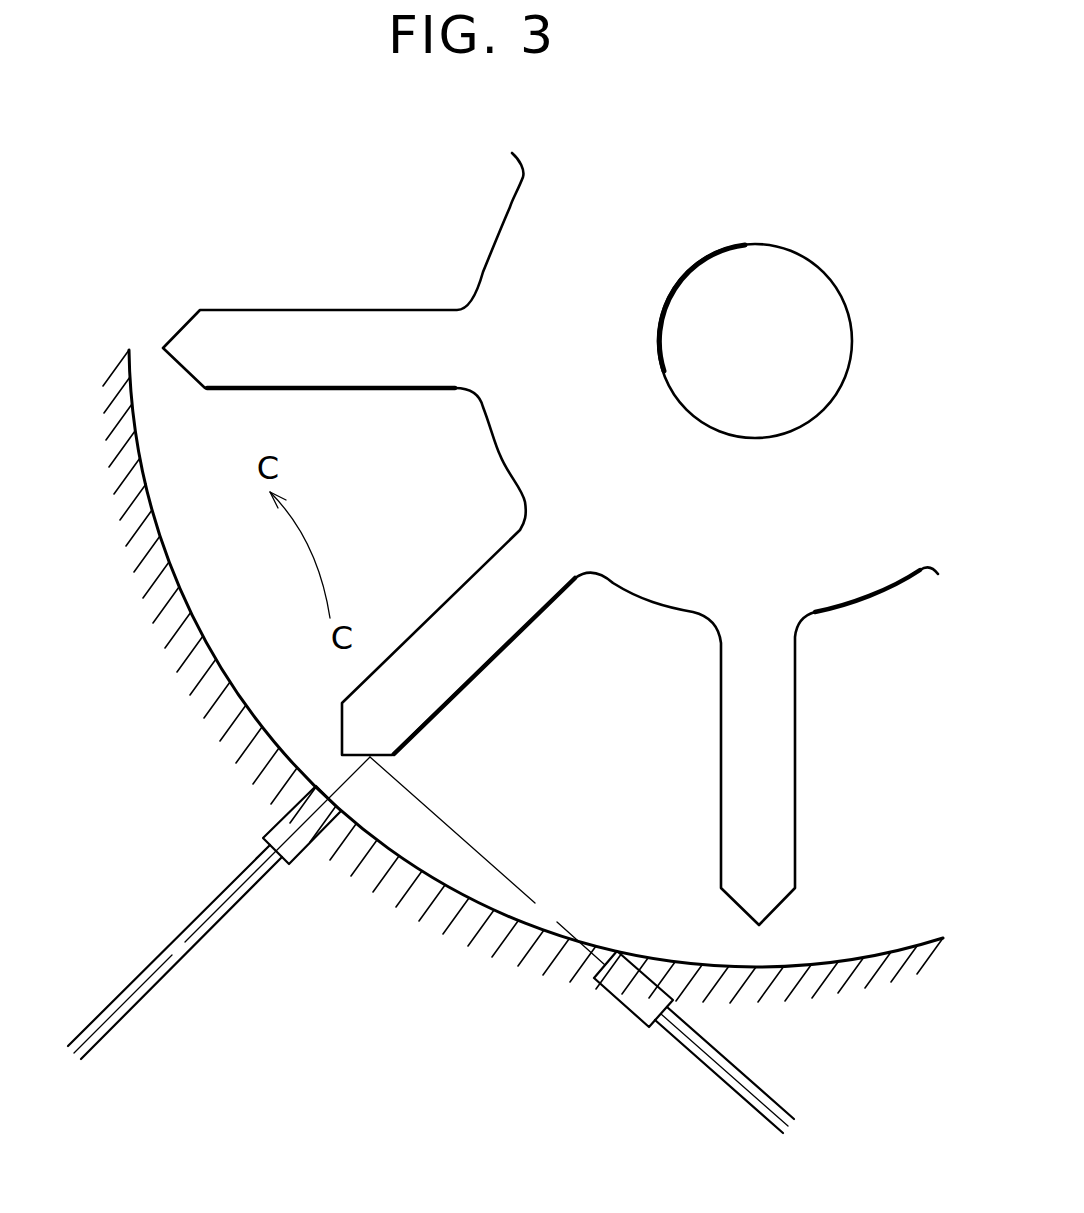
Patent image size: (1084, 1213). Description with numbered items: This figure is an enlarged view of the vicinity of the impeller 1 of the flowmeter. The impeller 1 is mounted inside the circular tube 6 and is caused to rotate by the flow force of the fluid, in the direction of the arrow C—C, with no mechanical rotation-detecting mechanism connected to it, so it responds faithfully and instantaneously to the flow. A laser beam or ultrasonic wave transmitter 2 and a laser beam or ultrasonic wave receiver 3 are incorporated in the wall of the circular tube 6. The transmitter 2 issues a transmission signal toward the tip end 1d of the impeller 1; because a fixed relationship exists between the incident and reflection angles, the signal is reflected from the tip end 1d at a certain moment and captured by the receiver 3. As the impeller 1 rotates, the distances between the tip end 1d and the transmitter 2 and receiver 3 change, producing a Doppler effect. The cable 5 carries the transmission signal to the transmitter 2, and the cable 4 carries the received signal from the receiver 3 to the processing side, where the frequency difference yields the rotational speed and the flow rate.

The impeller 1 is at (477, 568).
The tip end of the impeller 1d is at (387, 753).
The laser beam or ultrasonic wave transmitter 2 is at (613, 1003).
The laser beam or ultrasonic wave receiver 3 is at (298, 846).
The cable 4 is at (160, 978).
The cable 5 is at (748, 1087).
The circular tube 6 is at (136, 442).